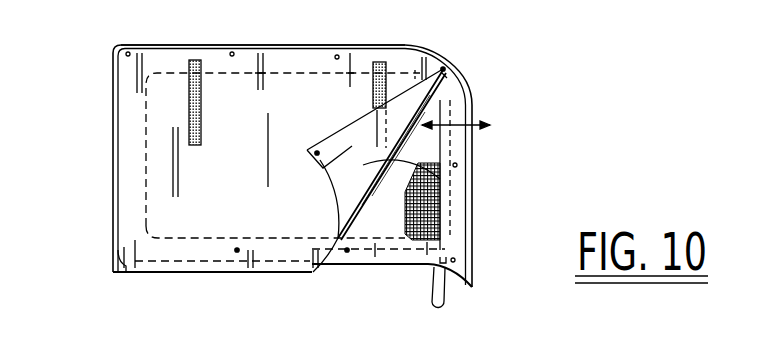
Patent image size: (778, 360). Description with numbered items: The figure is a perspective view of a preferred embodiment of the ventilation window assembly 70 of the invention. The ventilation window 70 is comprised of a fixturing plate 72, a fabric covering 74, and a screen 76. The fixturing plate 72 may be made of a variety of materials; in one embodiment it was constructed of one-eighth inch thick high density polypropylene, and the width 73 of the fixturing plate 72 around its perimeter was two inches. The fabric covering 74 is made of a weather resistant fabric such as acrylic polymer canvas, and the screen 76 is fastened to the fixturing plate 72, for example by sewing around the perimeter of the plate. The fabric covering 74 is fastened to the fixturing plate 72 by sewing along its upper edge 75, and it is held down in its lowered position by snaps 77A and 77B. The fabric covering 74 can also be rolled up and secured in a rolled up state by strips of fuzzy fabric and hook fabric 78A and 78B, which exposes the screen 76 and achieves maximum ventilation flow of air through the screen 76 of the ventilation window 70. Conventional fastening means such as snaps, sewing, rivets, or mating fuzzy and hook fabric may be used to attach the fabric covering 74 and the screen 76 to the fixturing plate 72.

The ventilation window assembly 70 is at (487, 148).
The fixturing plate 72 is at (448, 80).
The width 73 is at (470, 118).
The fabric covering 74 is at (440, 179).
The upper edge 75 is at (355, 47).
The screen 76 is at (393, 212).
The snap 77A is at (124, 262).
The snap 77B is at (318, 160).
The strip of fuzzy fabric and hook fabric 78A is at (200, 104).
The strip of fuzzy fabric and hook fabric 78B is at (372, 102).